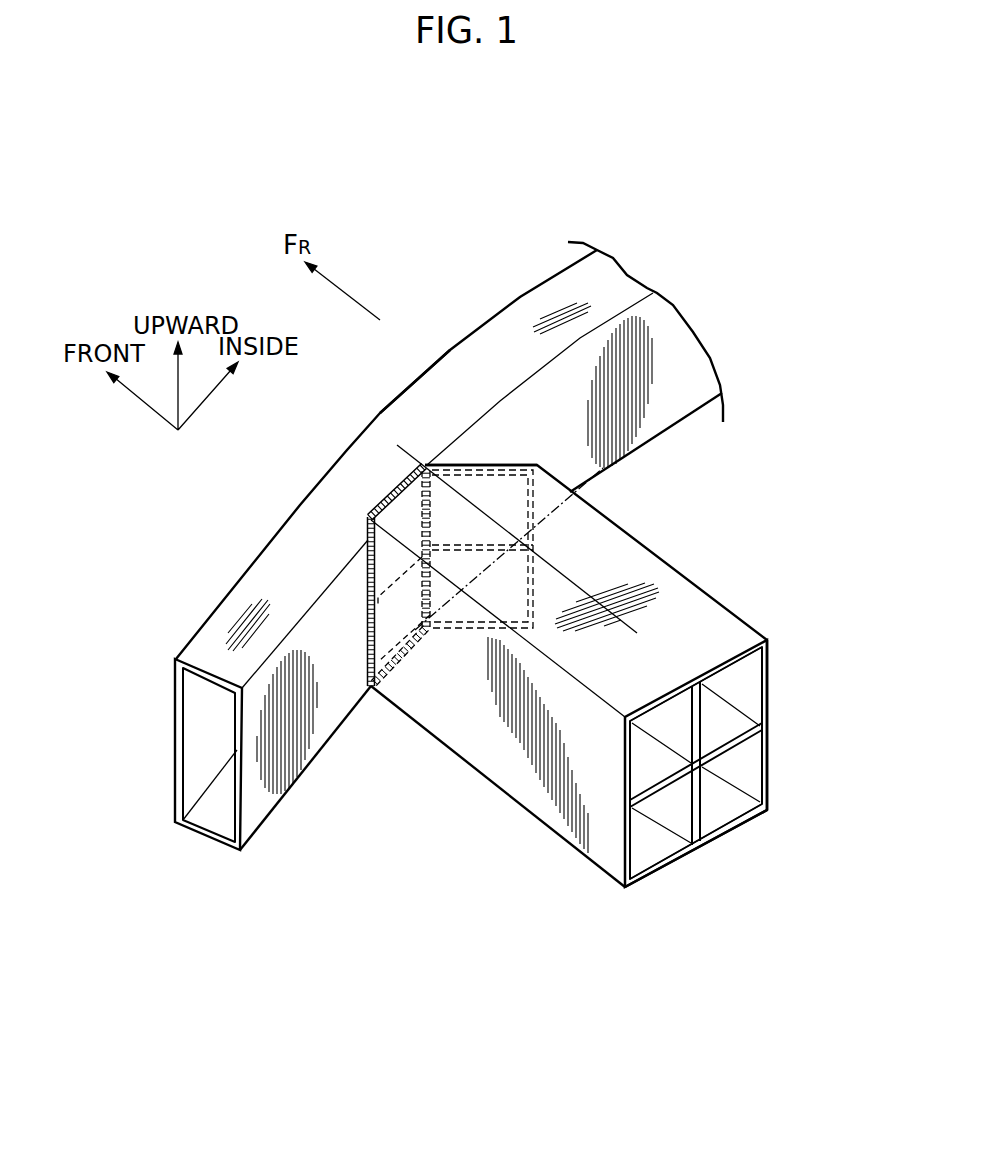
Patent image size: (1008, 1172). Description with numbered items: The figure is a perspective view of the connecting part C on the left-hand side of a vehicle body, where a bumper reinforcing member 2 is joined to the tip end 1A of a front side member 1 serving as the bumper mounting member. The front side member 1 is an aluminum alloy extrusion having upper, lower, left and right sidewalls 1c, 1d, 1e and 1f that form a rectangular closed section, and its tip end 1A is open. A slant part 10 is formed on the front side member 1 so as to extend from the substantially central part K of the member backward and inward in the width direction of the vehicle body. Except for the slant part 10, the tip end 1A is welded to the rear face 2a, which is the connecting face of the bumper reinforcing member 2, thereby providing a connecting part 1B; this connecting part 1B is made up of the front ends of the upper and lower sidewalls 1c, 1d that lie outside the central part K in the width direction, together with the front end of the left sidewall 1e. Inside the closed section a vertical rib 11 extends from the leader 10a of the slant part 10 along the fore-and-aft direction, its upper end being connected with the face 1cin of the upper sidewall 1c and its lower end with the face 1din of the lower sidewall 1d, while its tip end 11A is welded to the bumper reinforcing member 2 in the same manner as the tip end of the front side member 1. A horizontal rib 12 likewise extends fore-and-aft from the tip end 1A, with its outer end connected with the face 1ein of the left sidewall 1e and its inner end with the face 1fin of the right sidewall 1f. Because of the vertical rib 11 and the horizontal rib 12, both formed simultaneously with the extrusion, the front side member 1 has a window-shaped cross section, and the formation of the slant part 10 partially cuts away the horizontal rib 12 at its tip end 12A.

The front side member 1 is at (534, 637).
The tip end 1A is at (400, 521).
The connecting part 1B is at (300, 505).
The upper sidewall 1c is at (640, 567).
The lower sidewall 1d is at (670, 860).
The left sidewall 1e is at (497, 760).
The right sidewall 1f is at (770, 698).
The face of the upper sidewall 1cin is at (668, 708).
The face of the lower sidewall 1din is at (660, 865).
The face of the left sidewall 1ein is at (640, 830).
The face of the right sidewall 1fin is at (755, 760).
The bumper reinforcing member 2 is at (482, 312).
The rear face 2a is at (310, 727).
The slant part 10 is at (490, 465).
The leader of the slant part 10a is at (427, 464).
The vertical rib 11 is at (702, 682).
The tip end of the vertical rib 11A is at (410, 485).
The horizontal rib 12 is at (720, 735).
The tip end of the horizontal rib 12A is at (394, 592).
The connecting part C is at (416, 412).
The central part K is at (547, 563).